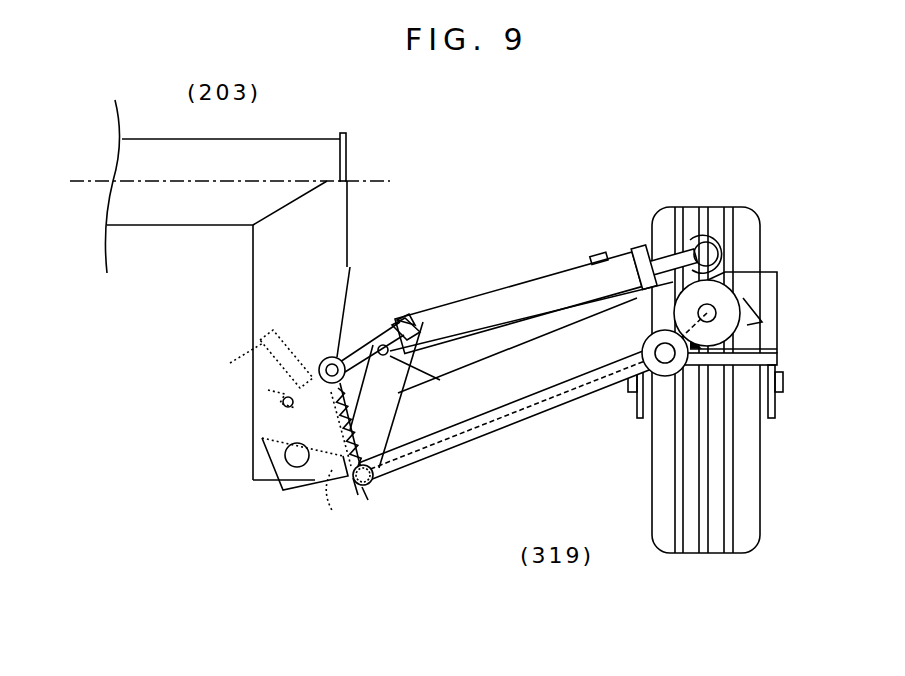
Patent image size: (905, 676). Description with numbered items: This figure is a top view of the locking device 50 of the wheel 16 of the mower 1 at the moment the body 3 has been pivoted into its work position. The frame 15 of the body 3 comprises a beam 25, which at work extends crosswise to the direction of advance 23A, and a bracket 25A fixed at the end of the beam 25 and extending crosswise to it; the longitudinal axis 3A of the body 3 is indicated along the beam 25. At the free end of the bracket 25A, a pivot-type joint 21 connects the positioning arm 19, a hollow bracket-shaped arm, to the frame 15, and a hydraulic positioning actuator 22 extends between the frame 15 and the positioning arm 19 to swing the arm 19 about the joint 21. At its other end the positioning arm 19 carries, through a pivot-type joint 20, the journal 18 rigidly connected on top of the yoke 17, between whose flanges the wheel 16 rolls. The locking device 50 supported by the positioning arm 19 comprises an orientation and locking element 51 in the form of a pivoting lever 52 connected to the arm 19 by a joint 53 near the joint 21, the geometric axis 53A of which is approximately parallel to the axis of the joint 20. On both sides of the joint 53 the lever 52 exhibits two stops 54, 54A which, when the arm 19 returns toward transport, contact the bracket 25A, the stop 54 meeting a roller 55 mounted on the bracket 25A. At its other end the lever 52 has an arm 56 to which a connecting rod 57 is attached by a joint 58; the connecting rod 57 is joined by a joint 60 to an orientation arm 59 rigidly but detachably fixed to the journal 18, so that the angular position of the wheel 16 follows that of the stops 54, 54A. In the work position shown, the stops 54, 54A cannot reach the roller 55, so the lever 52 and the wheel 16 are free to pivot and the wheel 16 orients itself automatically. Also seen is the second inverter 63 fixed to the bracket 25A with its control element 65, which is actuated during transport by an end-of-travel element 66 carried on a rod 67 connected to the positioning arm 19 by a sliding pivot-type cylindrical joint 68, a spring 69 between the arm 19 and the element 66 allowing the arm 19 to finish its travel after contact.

The mower 1 is at (156, 516).
The body 3 is at (284, 137).
The longitudinal axis 3A is at (352, 180).
The frame 15 is at (167, 223).
The wheel 16 is at (686, 553).
The yoke 17 is at (770, 283).
The journal 18 is at (713, 310).
The positioning arm 19 is at (752, 318).
The pivot-type joint 20 is at (709, 300).
The joint 21 is at (278, 472).
The hydraulic positioning actuator 22 is at (512, 291).
The direction of advance at work 23A is at (730, 60).
The beam 25 is at (227, 225).
The bracket 25A is at (257, 398).
The locking device 50 is at (375, 486).
The orientation and locking element 51 is at (402, 320).
The pivoting lever 52 is at (405, 334).
The joint 53 is at (432, 365).
The geometric axis 53A is at (398, 351).
The stop 54 is at (348, 352).
The stop 54A is at (402, 318).
The roller 55 is at (328, 357).
The arm 56 is at (368, 488).
The connecting rod 57 is at (506, 430).
The joint 58 is at (375, 474).
The orientation arm 59 is at (662, 330).
The joint 60 is at (664, 377).
The second inverter 63 is at (258, 350).
The control element 65 is at (310, 408).
The end-of-travel element 66 is at (328, 398).
The rod 67 is at (360, 487).
The sliding pivot-type cylindrical joint 68 is at (330, 472).
The spring 69 is at (350, 428).